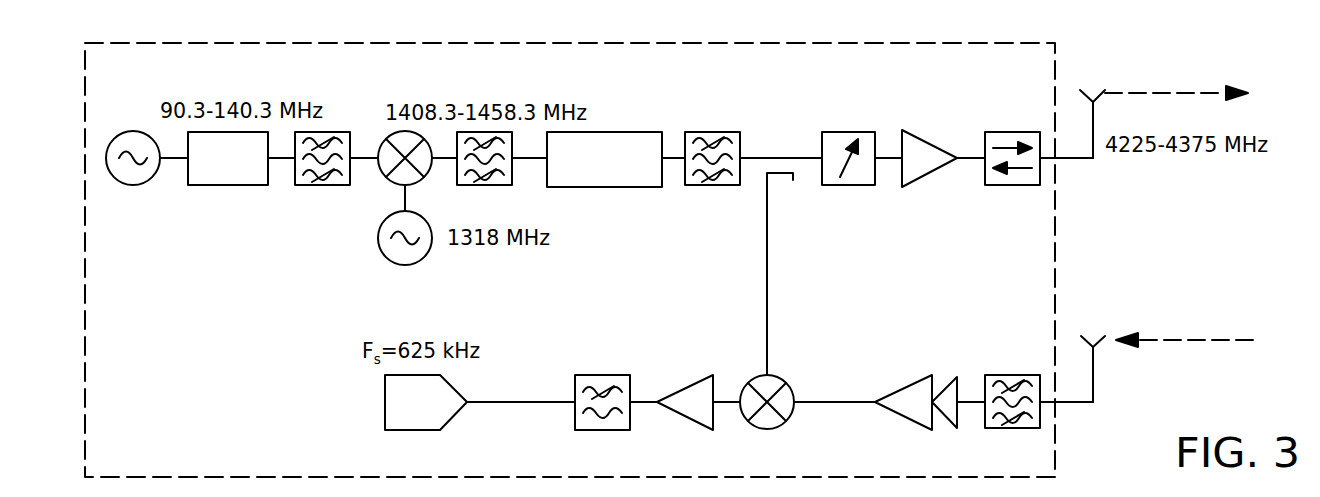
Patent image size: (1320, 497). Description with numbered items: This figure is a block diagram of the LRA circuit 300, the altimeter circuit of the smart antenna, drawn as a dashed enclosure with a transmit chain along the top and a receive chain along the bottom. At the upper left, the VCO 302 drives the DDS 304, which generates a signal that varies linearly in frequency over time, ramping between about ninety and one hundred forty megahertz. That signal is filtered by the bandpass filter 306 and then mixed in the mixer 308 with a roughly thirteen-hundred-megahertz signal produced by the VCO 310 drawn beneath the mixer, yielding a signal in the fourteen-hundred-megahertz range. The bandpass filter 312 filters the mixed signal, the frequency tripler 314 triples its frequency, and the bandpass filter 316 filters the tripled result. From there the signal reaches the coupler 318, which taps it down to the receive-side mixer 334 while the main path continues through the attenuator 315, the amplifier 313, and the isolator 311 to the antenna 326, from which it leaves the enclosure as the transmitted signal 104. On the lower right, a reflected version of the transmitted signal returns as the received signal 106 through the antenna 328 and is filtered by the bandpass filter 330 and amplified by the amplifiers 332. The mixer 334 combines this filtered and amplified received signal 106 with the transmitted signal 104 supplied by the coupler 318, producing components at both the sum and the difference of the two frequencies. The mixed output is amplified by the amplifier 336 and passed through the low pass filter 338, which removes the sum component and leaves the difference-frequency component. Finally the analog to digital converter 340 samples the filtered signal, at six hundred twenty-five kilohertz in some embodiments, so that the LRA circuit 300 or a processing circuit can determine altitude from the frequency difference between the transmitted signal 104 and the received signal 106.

The LRA circuit 300 is at (200, 43).
The VCO 302 is at (133, 185).
The DDS 304 is at (235, 186).
The bandpass filter 306 is at (335, 186).
The mixer 308 is at (387, 140).
The VCO 310 is at (403, 265).
The bandpass filter 312 is at (500, 187).
The frequency tripler 314 is at (598, 132).
The bandpass filter 316 is at (712, 132).
The coupler 318 is at (778, 190).
The attenuator 315 is at (832, 132).
The amplifier 313 is at (920, 135).
The isolator 311 is at (1025, 185).
The antenna 326 is at (1090, 88).
The transmitted signal 104 is at (1212, 95).
The antenna 328 is at (1087, 335).
The received signal 106 is at (1210, 343).
The bandpass filter 330 is at (1030, 428).
The amplifiers 332 is at (920, 380).
The mixer 334 is at (780, 380).
The amplifier 336 is at (700, 378).
The low pass filter 338 is at (588, 430).
The analog to digital converter (ADC) 340 is at (390, 430).